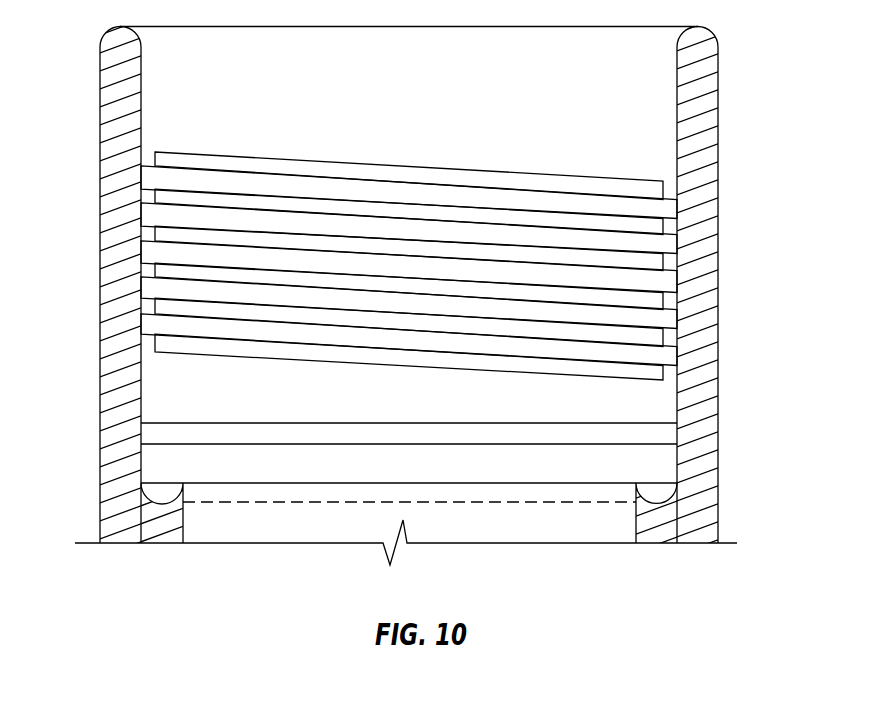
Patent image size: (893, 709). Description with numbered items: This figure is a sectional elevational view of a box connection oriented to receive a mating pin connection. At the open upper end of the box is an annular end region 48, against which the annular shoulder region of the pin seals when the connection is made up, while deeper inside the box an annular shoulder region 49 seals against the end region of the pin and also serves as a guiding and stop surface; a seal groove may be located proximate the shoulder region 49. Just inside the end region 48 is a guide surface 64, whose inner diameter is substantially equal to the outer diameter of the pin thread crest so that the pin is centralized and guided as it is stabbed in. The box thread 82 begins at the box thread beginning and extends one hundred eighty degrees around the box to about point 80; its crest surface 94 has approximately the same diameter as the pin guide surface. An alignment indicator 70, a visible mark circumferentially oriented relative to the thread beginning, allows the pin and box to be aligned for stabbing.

The annular end region 48 is at (141, 50).
The guide surface 64 is at (677, 50).
The alignment indicator 70 is at (411, 50).
The point 80 is at (412, 165).
The crest surface 94 is at (677, 237).
The box thread 82 is at (655, 262).
The shoulder region 49 is at (650, 503).